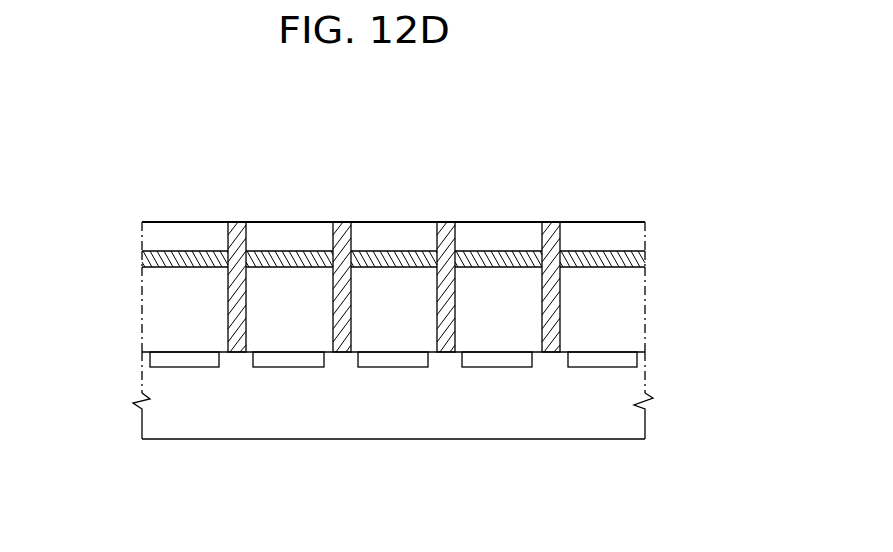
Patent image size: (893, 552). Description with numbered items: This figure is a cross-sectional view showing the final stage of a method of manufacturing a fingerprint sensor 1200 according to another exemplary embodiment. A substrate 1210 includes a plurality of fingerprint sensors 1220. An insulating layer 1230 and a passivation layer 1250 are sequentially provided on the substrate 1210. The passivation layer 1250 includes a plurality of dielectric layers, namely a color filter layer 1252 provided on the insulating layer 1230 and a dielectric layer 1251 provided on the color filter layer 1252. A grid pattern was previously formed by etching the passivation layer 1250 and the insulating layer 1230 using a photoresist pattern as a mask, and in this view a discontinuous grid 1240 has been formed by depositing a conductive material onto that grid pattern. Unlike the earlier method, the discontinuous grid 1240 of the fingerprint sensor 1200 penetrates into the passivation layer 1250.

The fingerprint sensor 1200 is at (103, 192).
The substrate 1210 is at (633, 407).
The fingerprint sensors 1220 is at (588, 360).
The insulating layer 1230 is at (640, 308).
The discontinuous grid 1240 is at (551, 230).
The passivation layer 1250 is at (727, 222).
The dielectric layer 1251 is at (640, 230).
The color filter layer 1252 is at (640, 260).